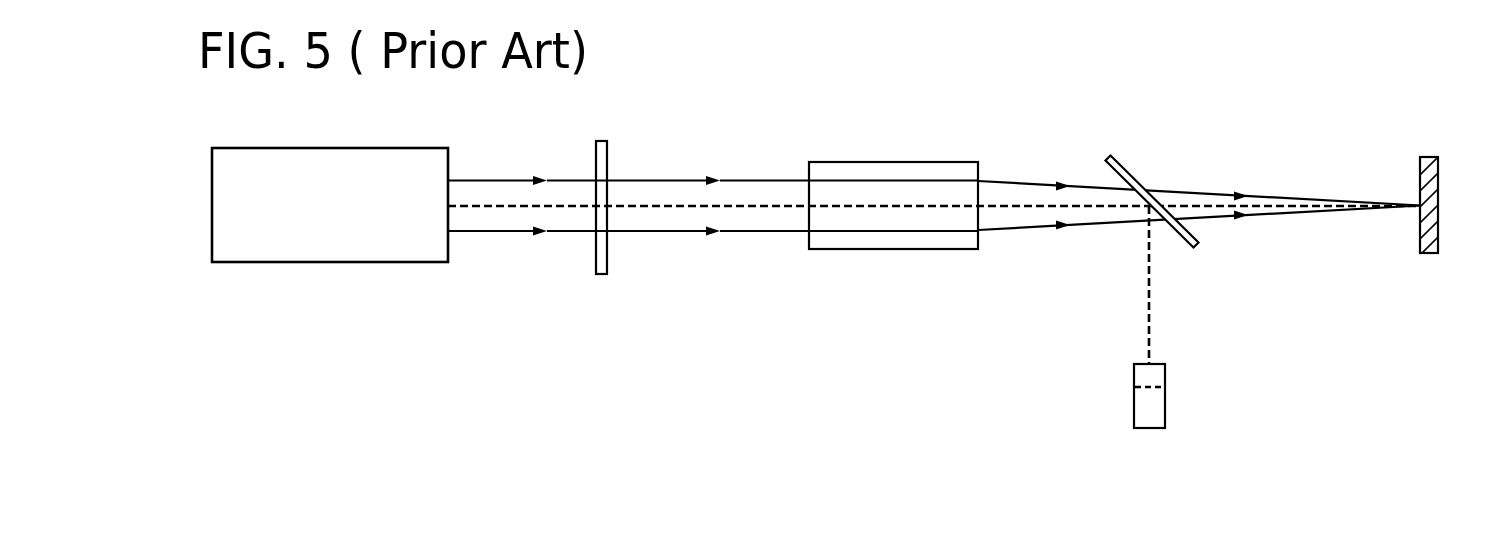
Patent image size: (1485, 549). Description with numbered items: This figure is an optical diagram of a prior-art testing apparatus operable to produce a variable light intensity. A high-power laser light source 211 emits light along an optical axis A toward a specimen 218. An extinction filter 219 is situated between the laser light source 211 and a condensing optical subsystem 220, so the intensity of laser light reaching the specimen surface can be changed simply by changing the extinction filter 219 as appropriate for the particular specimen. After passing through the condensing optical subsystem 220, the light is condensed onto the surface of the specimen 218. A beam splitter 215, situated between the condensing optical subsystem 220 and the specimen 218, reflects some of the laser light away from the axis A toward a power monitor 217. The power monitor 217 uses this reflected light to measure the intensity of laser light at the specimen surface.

The high-power laser light source 211 is at (340, 147).
The extinction filter 219 is at (600, 140).
The condensing optical subsystem 220 is at (884, 161).
The beam splitter 215 is at (1107, 154).
The specimen 218 is at (1428, 156).
The power monitor 217 is at (1150, 430).
The optical axis A is at (504, 208).